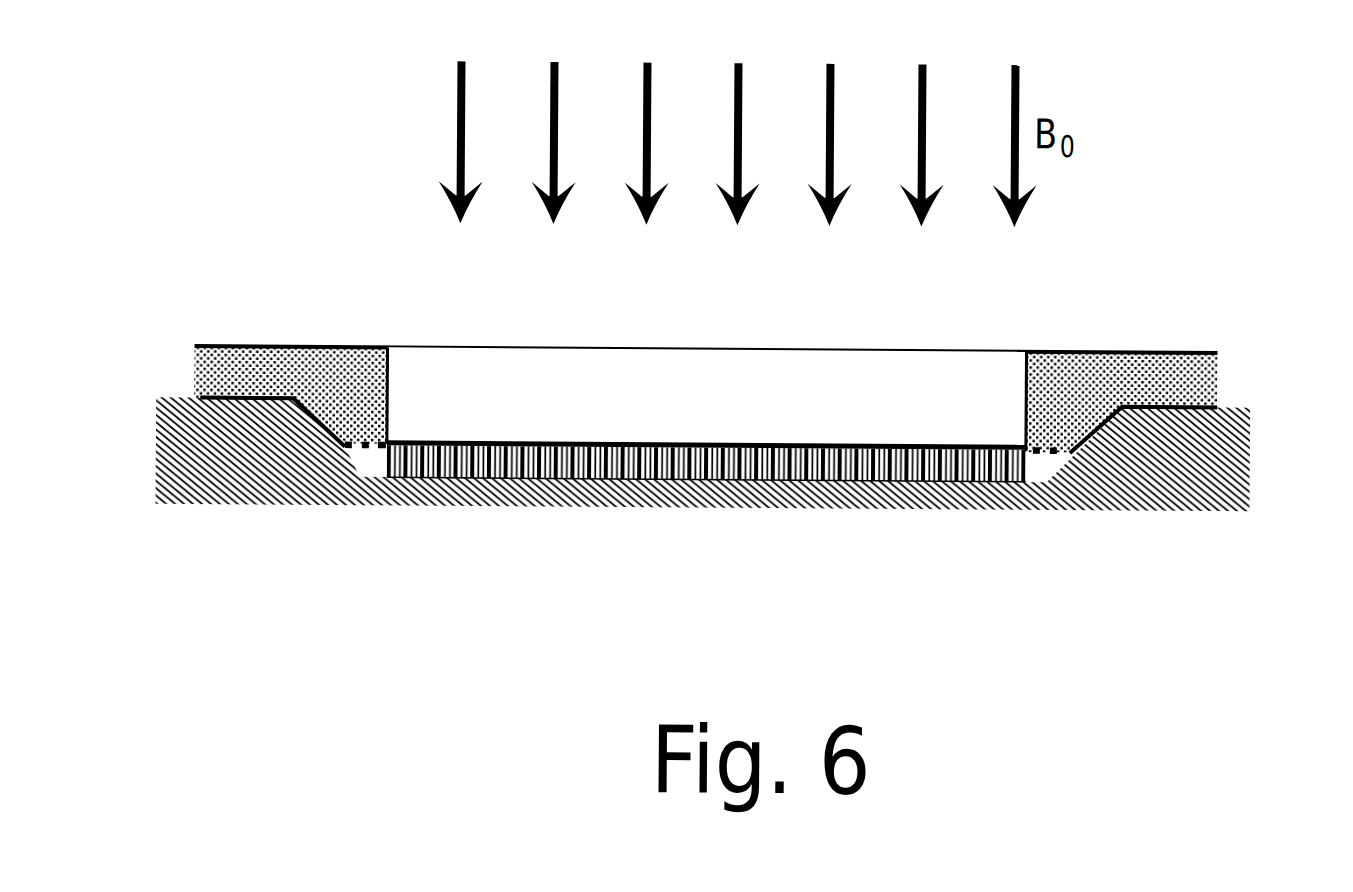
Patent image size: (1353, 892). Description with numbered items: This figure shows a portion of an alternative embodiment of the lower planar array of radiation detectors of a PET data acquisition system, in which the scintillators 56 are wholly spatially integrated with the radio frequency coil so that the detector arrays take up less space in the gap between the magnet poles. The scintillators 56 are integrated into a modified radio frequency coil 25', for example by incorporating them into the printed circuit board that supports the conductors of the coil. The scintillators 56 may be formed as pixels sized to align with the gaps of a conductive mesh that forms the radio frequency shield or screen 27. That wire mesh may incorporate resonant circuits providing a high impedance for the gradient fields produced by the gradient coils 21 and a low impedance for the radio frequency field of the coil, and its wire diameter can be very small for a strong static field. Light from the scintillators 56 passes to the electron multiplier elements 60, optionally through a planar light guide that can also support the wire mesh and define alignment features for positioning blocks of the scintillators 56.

The gradient coils 21 is at (1213, 446).
The modified radio frequency coil 25' is at (721, 359).
The radio frequency shield or screen 27 is at (368, 444).
The scintillators 56 is at (920, 374).
The electron multiplier elements 60 is at (730, 445).